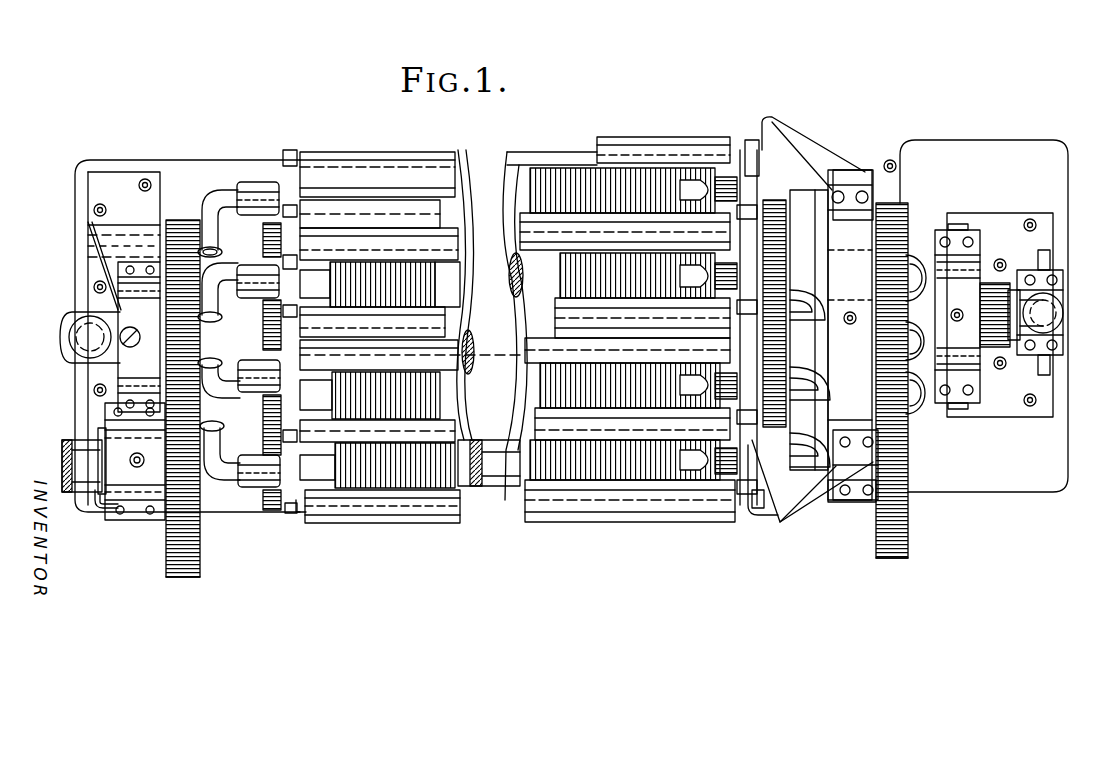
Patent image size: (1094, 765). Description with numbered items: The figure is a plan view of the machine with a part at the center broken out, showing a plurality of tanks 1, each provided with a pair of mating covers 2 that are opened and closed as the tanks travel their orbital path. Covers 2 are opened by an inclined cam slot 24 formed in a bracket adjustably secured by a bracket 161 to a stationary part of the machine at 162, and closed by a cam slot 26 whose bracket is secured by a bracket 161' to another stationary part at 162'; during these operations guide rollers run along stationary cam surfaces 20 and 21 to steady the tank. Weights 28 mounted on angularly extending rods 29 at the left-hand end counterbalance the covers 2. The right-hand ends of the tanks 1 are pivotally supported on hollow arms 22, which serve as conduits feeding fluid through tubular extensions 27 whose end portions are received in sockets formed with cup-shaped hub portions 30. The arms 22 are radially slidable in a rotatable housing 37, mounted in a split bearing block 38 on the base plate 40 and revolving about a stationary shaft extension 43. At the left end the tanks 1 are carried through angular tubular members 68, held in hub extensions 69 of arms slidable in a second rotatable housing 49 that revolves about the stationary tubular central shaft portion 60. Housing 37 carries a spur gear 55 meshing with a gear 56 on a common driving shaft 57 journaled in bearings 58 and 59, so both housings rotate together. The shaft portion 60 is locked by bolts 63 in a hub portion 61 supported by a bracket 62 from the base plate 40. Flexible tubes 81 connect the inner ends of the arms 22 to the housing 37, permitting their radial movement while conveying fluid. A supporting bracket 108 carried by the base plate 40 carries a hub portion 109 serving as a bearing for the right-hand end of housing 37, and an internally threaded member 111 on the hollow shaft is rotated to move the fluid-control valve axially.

The tank 1 is at (536, 190).
The cover 2 is at (405, 185).
The stationary cam surface 20 is at (778, 522).
The stationary cam surface 21 is at (770, 182).
The hollow arm 22 is at (832, 190).
The inclined cam slot 24 is at (759, 508).
The cam slot 26 is at (750, 140).
The tubular extension 27 is at (795, 165).
The weight 28 is at (293, 510).
The rod 29 is at (299, 512).
The hub portion 30 is at (730, 490).
The rotatable housing 37 is at (822, 327).
The split bearing block 38 is at (889, 160).
The base plate 40 is at (104, 160).
The shaft extension 43 is at (513, 262).
The rotatable housing 49 is at (212, 412).
The spur gear 55 is at (178, 220).
The gear 56 is at (188, 577).
The driving shaft 57 is at (83, 493).
The bearing 58 is at (862, 502).
The bearing 59 is at (135, 521).
The tubular central shaft portion 60 is at (468, 374).
The hub portion 61 is at (130, 312).
The bracket 62 is at (120, 310).
The bolt 63 is at (125, 345).
The angular tubular member 68 is at (226, 195).
The hub extension 69 is at (258, 185).
The flexible tube 81 is at (968, 268).
The supporting bracket 108 is at (1043, 375).
The hub portion 109 is at (982, 265).
The member 111 is at (993, 350).
The bracket 161 is at (812, 531).
The bracket 161' is at (813, 118).
The stationary part 162 is at (855, 503).
The stationary part 162' is at (865, 166).